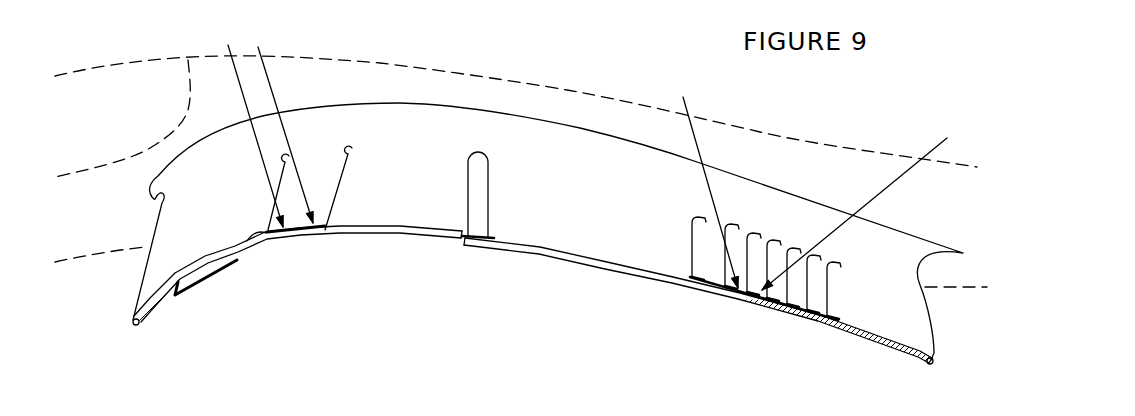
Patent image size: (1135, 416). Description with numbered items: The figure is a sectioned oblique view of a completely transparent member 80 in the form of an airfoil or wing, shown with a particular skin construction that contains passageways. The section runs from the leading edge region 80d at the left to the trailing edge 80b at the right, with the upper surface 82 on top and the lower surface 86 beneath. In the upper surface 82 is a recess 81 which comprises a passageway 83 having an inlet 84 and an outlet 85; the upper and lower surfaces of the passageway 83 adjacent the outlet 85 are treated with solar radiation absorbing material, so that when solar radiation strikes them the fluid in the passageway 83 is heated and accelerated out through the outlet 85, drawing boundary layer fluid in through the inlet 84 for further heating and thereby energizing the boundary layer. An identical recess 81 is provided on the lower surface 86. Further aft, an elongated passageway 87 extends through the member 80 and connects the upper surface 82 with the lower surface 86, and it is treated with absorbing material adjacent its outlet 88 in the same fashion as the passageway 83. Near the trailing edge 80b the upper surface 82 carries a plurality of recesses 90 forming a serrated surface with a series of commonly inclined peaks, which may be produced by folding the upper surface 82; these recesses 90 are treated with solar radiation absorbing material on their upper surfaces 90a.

The member 80 is at (543, 145).
The leading edge 80d is at (131, 311).
The trailing edge 80b is at (932, 352).
The recess 81 is at (138, 42).
The upper surface 82 is at (437, 222).
The passageway 83 is at (317, 240).
The inlet 84 is at (262, 244).
The outlet 85 is at (359, 231).
The lower surface 86 is at (566, 258).
The elongated passageway 87 is at (478, 162).
The outlet 88 is at (478, 222).
The recesses 90 is at (702, 243).
The upper surfaces 90a is at (720, 280).